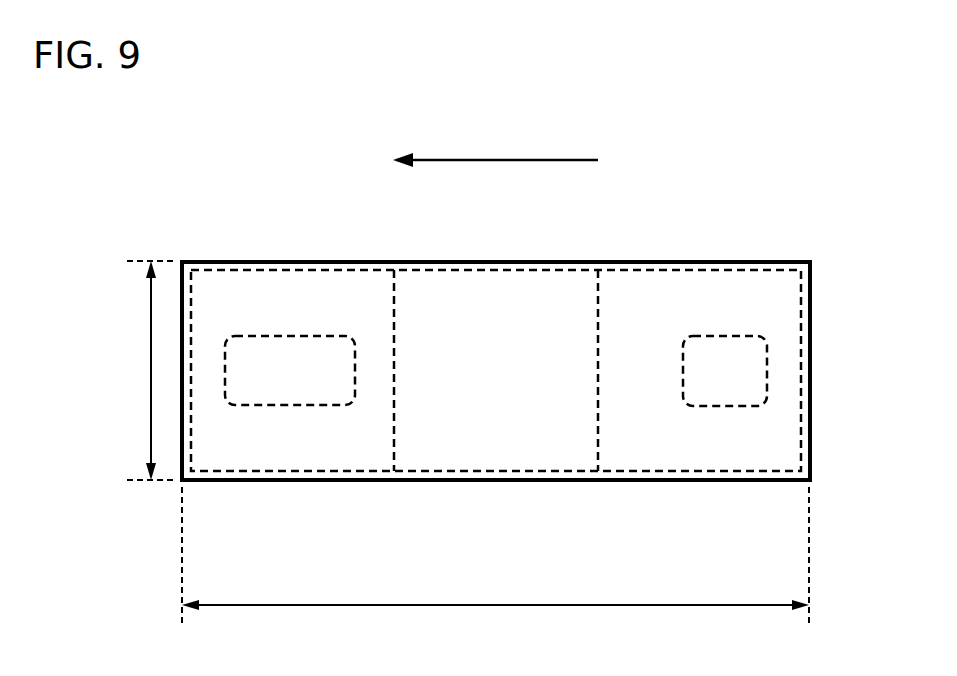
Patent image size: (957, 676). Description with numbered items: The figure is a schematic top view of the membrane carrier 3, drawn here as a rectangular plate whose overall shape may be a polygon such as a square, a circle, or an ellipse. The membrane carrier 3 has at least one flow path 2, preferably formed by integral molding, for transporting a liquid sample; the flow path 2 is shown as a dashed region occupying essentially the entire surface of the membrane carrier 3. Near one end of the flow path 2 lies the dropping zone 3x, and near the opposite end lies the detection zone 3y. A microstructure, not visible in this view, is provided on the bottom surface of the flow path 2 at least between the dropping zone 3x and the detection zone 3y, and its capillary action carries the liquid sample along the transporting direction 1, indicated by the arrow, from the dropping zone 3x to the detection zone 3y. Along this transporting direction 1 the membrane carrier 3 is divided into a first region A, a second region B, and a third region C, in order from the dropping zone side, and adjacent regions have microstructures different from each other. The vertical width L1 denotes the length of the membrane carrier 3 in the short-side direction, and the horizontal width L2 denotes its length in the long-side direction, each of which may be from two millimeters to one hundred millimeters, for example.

The transporting direction 1 is at (502, 160).
The flow path 2 is at (422, 266).
The membrane carrier 3 is at (663, 213).
The dropping zone 3x is at (767, 368).
The detection zone 3y is at (269, 335).
The first region A is at (727, 453).
The second region B is at (503, 453).
The third region C is at (275, 453).
The vertical width L1 is at (141, 370).
The horizontal width L2 is at (495, 564).